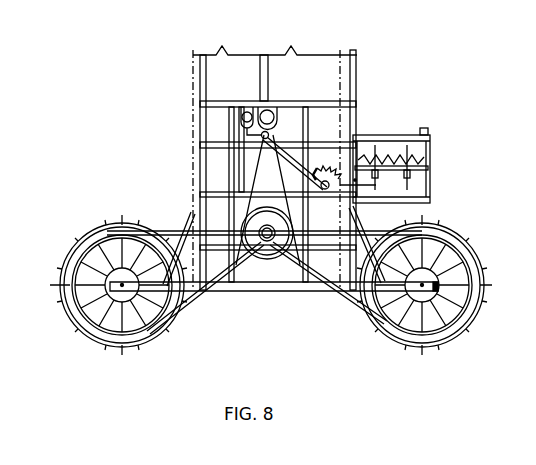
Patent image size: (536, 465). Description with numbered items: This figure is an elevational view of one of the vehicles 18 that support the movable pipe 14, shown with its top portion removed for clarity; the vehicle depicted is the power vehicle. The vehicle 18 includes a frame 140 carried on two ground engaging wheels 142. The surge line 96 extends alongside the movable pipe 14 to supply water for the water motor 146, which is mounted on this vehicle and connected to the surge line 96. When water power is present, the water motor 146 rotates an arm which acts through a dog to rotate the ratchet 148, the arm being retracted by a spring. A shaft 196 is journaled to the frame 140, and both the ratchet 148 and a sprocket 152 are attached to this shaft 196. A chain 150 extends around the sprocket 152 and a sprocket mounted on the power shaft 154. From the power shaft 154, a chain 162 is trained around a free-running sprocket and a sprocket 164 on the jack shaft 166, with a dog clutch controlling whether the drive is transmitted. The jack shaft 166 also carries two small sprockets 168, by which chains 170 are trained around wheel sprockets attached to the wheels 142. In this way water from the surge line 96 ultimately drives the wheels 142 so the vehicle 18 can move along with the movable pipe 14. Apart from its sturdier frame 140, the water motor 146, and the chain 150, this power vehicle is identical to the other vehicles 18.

The vehicle 18 is at (383, 54).
The movable pipe 14 is at (274, 106).
The surge line 96 is at (247, 110).
The frame 140 is at (356, 68).
The ground engaging wheels 142 is at (463, 327).
The water motor 146 is at (430, 160).
The ratchet 148 is at (352, 204).
The chain 150 is at (340, 122).
The sprocket 152 is at (326, 190).
The power shaft 154 is at (199, 144).
The chain 162 is at (340, 122).
The sprocket 164 is at (192, 205).
The jack shaft 166 is at (265, 260).
The small sprockets 168 is at (266, 256).
The chains 170 is at (197, 305).
The shaft 196 is at (374, 186).